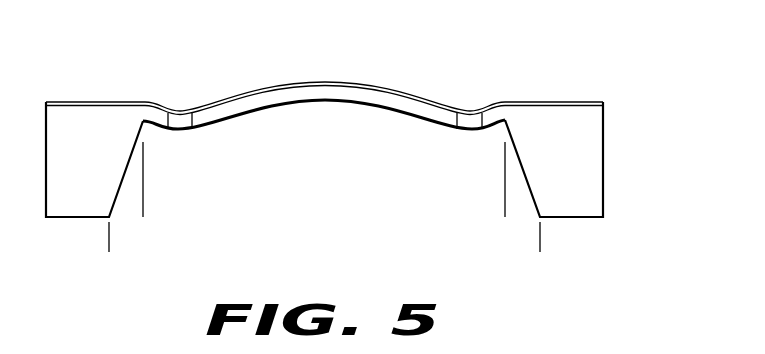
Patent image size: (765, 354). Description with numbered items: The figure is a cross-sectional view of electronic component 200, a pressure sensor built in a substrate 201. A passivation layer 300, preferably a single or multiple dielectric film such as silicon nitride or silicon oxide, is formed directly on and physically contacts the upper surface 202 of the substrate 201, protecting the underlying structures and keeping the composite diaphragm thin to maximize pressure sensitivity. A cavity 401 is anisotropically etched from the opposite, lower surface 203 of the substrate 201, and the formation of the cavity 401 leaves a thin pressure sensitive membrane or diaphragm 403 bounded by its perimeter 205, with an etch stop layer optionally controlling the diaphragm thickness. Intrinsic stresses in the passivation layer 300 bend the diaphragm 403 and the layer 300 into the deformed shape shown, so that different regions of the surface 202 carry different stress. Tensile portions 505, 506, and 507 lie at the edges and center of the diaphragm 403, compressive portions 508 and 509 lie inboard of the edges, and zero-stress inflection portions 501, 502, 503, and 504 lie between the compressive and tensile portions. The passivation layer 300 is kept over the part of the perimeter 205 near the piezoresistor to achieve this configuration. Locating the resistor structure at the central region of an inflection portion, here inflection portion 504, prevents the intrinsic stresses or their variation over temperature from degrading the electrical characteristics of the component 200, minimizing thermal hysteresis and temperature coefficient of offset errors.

The electronic component 200 is at (166, 328).
The substrate 201 is at (603, 162).
The surface 202 is at (568, 106).
The surface 203 is at (585, 218).
The perimeter 205 is at (495, 211).
The passivation layer 300 is at (73, 101).
The cavity 401 is at (530, 245).
The diaphragm 403 is at (322, 102).
The inflection portion 501 is at (168, 143).
The inflection portion 502 is at (221, 89).
The inflection portion 503 is at (430, 85).
The inflection portion 504 is at (482, 143).
The tensile portion 505 is at (153, 92).
The tensile portion 506 is at (324, 66).
The tensile portion 507 is at (496, 88).
The compressive portion 508 is at (192, 143).
The compressive portion 509 is at (457, 143).